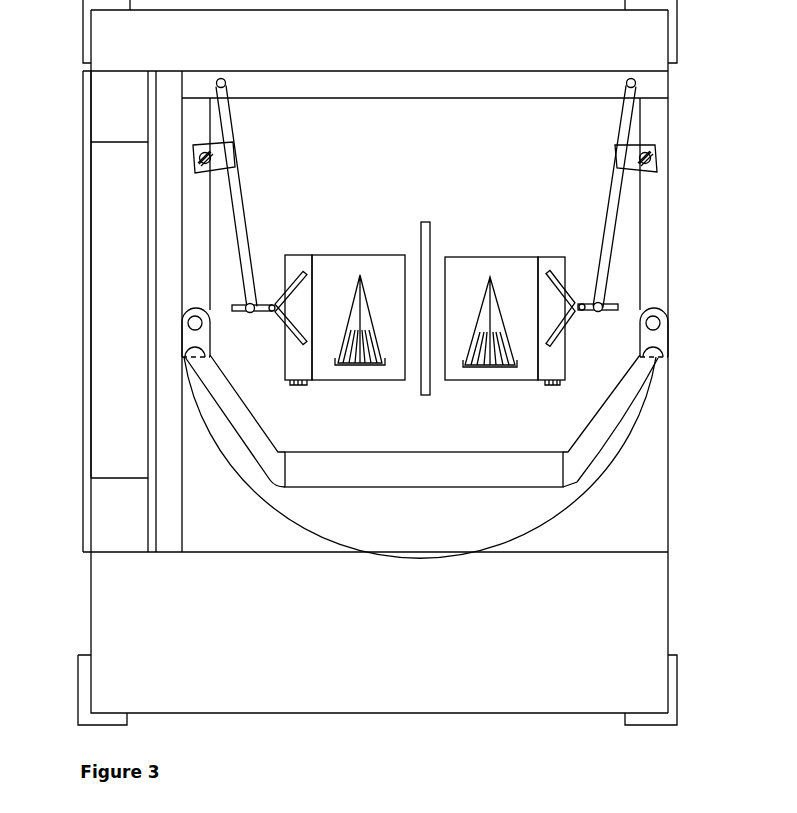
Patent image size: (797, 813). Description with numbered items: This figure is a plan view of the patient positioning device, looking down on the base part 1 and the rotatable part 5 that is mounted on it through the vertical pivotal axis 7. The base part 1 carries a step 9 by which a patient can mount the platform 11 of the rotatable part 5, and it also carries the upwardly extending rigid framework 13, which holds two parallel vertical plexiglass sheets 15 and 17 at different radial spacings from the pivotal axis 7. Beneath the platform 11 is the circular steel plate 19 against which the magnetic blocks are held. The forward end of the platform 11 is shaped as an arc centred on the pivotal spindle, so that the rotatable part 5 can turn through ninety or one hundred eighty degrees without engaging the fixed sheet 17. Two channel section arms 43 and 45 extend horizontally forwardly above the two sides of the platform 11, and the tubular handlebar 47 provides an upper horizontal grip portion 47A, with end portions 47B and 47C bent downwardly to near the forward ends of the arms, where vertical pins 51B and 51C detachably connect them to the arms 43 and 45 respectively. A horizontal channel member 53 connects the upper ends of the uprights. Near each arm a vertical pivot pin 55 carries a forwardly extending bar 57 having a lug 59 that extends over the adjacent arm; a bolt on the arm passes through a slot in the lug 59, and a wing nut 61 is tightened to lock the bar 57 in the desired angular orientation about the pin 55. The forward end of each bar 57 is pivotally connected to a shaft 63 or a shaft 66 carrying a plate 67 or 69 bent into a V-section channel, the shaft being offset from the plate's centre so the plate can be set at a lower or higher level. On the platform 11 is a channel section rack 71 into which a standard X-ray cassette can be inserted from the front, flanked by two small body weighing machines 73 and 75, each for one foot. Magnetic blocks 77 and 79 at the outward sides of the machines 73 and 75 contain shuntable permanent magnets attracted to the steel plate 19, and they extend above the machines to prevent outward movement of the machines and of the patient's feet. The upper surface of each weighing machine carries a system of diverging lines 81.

The base part 1 is at (648, 527).
The rotatable part 5 is at (627, 262).
The vertical pivotal axis 7 is at (449, 295).
The step 9 is at (655, 688).
The platform 11 is at (414, 532).
The rigid framework 13 is at (100, 535).
The vertical sheet 15 is at (81, 295).
The vertical sheet 17 is at (150, 442).
The circular steel plate 19 is at (493, 522).
The channel section arm 43 is at (197, 250).
The channel section arm 45 is at (655, 283).
The tubular handlebar 47 is at (423, 450).
The upper horizontal grip portion 47A is at (317, 470).
The end portion 47B is at (245, 420).
The end portion 47C is at (607, 425).
The vertical pin 51B is at (183, 333).
The vertical pin 51C is at (657, 323).
The horizontal channel member 53 is at (432, 83).
The vertical pivot pin 55 is at (697, 83).
The bar 57 is at (426, 196).
The lug 59 is at (458, 155).
The wing nut 61 is at (697, 152).
The shaft 63 is at (257, 312).
The shaft 66 is at (593, 312).
The plate 67 is at (283, 327).
The plate 69 is at (567, 328).
The rack 71 is at (425, 233).
The body weighing machine 73 is at (382, 275).
The body weighing machine 75 is at (515, 272).
The magnetic block 77 is at (297, 267).
The magnetic block 79 is at (560, 372).
The diverging lines 81 is at (490, 412).